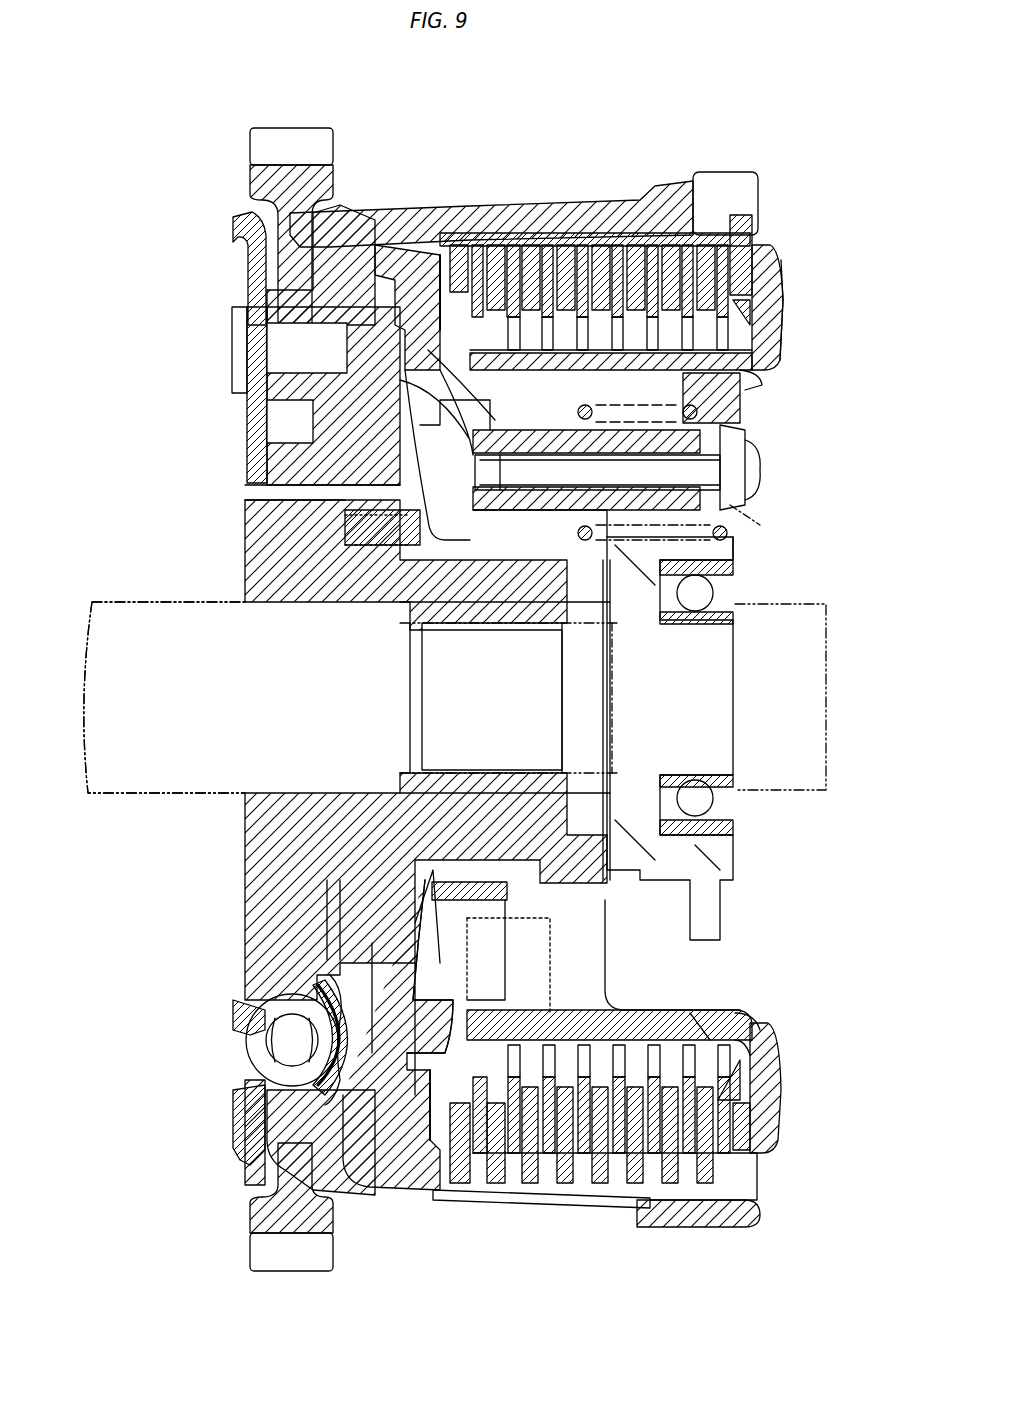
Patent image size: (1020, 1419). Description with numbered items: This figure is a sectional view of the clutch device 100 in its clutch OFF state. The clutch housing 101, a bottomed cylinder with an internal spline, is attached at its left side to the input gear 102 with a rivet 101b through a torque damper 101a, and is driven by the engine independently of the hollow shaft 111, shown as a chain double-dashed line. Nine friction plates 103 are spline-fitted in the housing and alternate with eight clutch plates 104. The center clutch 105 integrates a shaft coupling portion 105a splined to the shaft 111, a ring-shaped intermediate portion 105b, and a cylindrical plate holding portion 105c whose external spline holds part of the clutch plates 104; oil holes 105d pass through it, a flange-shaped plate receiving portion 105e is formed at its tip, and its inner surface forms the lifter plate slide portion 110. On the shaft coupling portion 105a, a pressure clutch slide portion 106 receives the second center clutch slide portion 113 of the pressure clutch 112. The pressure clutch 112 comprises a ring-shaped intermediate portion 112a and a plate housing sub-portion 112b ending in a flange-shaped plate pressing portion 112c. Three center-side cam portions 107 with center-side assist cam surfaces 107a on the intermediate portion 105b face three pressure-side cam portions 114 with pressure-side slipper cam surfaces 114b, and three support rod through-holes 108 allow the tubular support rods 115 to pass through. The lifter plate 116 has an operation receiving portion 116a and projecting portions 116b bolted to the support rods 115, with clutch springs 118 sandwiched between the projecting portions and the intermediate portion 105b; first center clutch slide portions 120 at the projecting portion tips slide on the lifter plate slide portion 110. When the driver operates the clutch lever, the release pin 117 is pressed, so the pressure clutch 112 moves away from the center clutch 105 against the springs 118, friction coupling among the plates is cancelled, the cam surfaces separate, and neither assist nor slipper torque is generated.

The clutch device 100 is at (111, 82).
The clutch housing 101 is at (663, 173).
The torque damper 101a is at (240, 1040).
The rivet 101b is at (233, 350).
The input gear 102 is at (250, 145).
The friction plates 103 is at (528, 1190).
The clutch plates 104 is at (615, 1190).
The center clutch 105 is at (784, 255).
The shaft coupling portion 105a is at (340, 545).
The ring-shaped intermediate portion 105b is at (605, 968).
The plate holding portion 105c is at (755, 1052).
The oil holes 105d is at (700, 1025).
The plate receiving portion 105e is at (780, 295).
The pressure clutch slide portion 106 is at (340, 525).
The center-side cam portions 107 is at (452, 953).
The center-side assist cam surface 107a is at (550, 942).
The support rod through-holes 108 is at (335, 495).
The lifter plate slide portion 110 is at (745, 383).
The shaft 111 is at (120, 796).
The pressure clutch 112 is at (403, 276).
The ring-shaped intermediate portion 112a is at (392, 1150).
The plate housing sub-portion 112b is at (445, 300).
The plate pressing portion 112c is at (430, 1150).
The second center clutch slide portion 113 is at (400, 830).
The pressure-side cam portions 114 is at (513, 905).
The pressure-side slipper cam surface 114b is at (443, 973).
The tubular support rods 115 is at (745, 437).
The lifter plate 116 is at (744, 900).
The operation receiving portion 116a is at (735, 548).
The projecting portions 116b is at (745, 412).
The release pin 117 is at (826, 647).
The clutch spring 118 is at (730, 512).
The first center clutch slide portion 120 is at (740, 353).